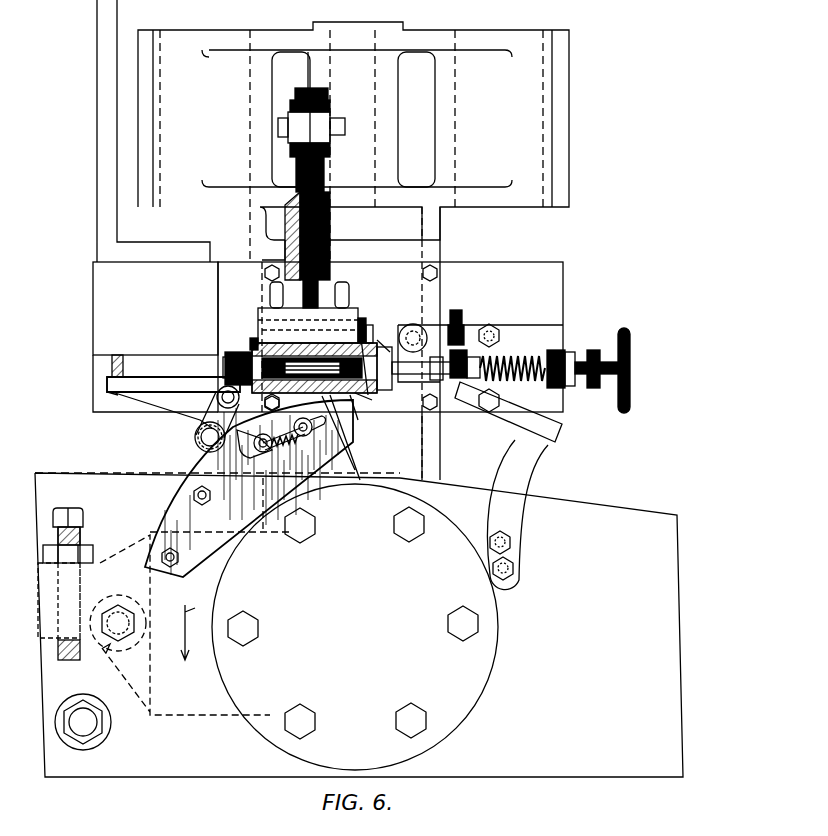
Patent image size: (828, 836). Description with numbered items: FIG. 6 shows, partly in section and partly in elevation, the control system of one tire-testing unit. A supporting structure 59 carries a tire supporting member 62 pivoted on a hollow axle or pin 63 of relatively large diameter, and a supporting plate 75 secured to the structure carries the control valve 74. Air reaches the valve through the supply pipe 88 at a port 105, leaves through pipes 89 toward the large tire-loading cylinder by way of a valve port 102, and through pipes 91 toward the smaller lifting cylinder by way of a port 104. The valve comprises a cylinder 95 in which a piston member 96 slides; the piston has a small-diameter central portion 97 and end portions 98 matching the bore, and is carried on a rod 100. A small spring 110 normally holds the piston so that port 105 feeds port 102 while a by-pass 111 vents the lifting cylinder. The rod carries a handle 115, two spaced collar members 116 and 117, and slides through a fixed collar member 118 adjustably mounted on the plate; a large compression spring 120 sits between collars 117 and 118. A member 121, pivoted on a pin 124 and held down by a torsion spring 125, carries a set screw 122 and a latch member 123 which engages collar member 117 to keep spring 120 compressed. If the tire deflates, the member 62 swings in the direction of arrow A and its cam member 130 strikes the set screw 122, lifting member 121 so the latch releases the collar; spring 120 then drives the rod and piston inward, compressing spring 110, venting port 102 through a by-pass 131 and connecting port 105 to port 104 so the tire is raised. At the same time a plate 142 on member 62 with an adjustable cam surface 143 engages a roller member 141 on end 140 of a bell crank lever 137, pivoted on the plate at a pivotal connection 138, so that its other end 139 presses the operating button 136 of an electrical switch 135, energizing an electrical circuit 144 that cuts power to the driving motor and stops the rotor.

The supporting structure 59 is at (510, 197).
The tire supporting member 62 is at (153, 762).
The hollow axle or pin 63 is at (456, 689).
The control valve 74 is at (366, 331).
The supporting plate 75 is at (565, 276).
The pipe 88 is at (318, 296).
The pipes 89 is at (266, 291).
The pipes 91 is at (352, 303).
The cylinder 95 is at (363, 402).
The piston member 96 is at (340, 397).
The central portion 97 is at (313, 401).
The end portions 98 is at (258, 345).
The rod 100 is at (412, 378).
The valve port 102 is at (373, 336).
The port 104 is at (268, 321).
The port 105 is at (306, 343).
The spring 110 is at (238, 359).
The by-pass 111 is at (217, 398).
The handle 115 is at (632, 351).
The collar member 116 is at (442, 390).
The collar member 117 is at (489, 324).
The fixed collar member 118 is at (562, 352).
The compression spring 120 is at (518, 349).
The member 121 is at (440, 329).
The set screw 122 is at (456, 328).
The latch member 123 is at (468, 385).
The pin 124 is at (416, 324).
The torsion spring 125 is at (391, 346).
The cam member 130 is at (522, 459).
The by-pass 131 is at (384, 391).
The electrical switch 135 is at (100, 329).
The operating button 136 is at (112, 367).
The bell crank lever 137 is at (170, 403).
The pivotal connection 138 is at (216, 406).
The end 139 is at (110, 388).
The end 140 is at (204, 441).
The roller member 141 is at (246, 436).
The plate 142 is at (186, 512).
The cam surface 143 is at (306, 440).
The electrical circuit 144 is at (108, 34).